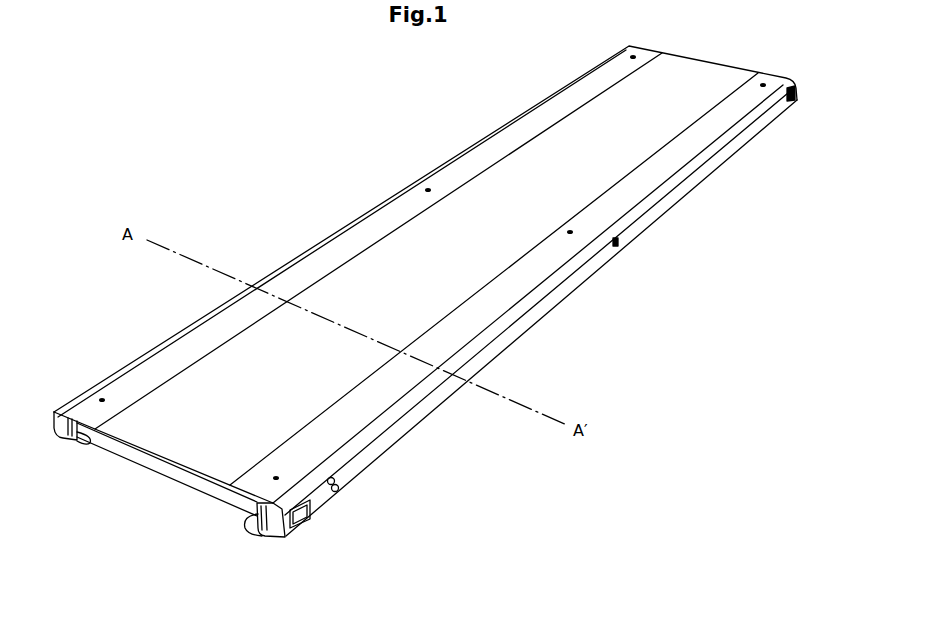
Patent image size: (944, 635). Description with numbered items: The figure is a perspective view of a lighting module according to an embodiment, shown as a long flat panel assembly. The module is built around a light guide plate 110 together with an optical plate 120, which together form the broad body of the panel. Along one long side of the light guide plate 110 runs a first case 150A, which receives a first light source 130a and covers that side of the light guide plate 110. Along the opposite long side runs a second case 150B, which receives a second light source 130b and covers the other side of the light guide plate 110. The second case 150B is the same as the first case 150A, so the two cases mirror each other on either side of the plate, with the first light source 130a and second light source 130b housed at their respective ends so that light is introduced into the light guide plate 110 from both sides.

The light guide plate 110 is at (163, 467).
The optical plate 120 is at (172, 404).
The first light source 130a is at (71, 441).
The second light source 130b is at (263, 533).
The first case 150A is at (349, 243).
The second case 150B is at (527, 300).